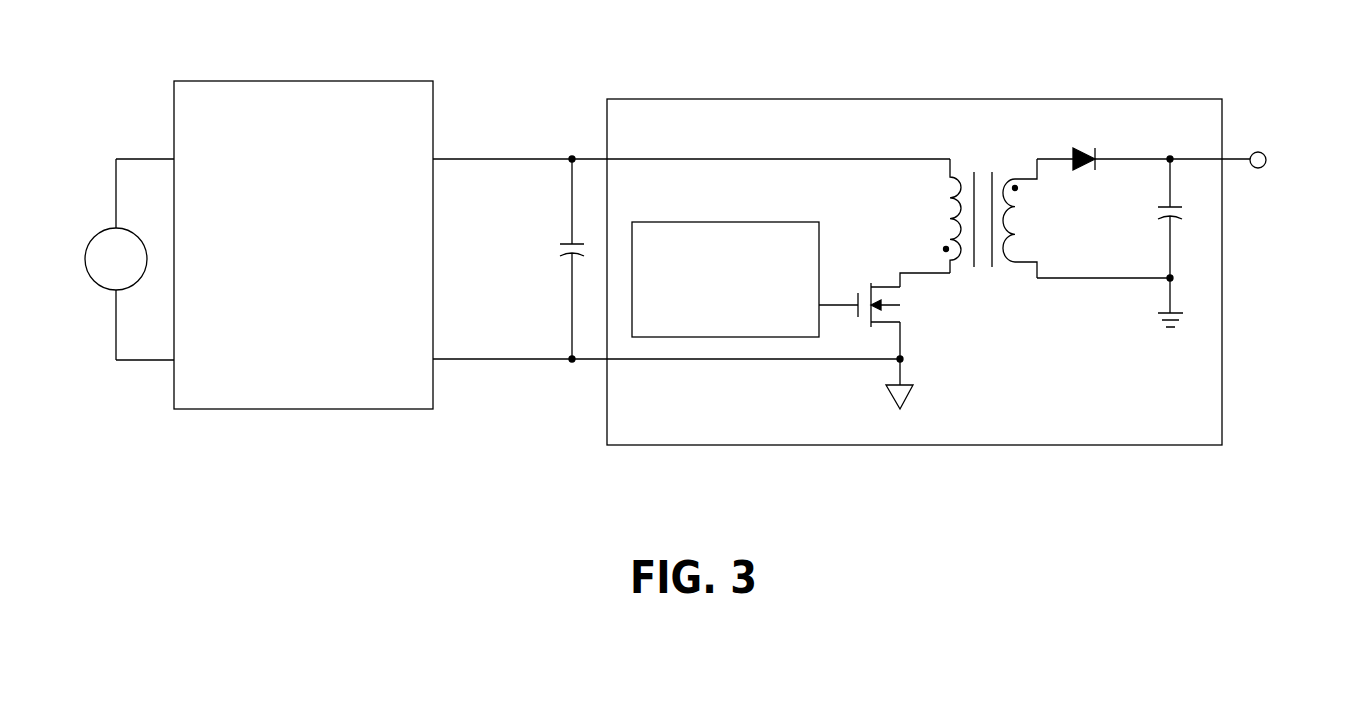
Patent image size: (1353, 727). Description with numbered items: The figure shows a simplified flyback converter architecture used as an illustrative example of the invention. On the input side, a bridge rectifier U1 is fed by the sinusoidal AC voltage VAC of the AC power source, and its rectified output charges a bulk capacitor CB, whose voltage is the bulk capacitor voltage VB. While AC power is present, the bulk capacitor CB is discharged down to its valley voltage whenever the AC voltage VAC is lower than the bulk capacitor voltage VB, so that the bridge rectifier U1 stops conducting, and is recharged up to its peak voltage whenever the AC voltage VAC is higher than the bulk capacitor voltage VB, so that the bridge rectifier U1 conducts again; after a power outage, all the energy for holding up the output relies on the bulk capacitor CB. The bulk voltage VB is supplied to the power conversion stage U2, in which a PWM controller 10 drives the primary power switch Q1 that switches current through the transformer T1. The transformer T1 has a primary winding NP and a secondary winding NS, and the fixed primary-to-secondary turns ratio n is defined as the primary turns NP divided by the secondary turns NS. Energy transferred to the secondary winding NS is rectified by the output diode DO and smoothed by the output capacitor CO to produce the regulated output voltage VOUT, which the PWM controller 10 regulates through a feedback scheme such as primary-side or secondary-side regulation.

The bridge rectifier U1 is at (303, 81).
The power conversion stage U2 is at (915, 99).
The PWM controller 10 is at (727, 222).
The sinusoidal AC voltage VAC is at (129, 259).
The bulk capacitor voltage VB is at (567, 135).
The bulk capacitor CB is at (551, 259).
The primary power switch Q1 is at (901, 325).
The transformer T1 is at (981, 250).
The primary turns NP is at (929, 216).
The secondary turns NS is at (1034, 218).
The output diode DO is at (1143, 139).
The output capacitor CO is at (1110, 241).
The output voltage VOUT is at (1292, 164).